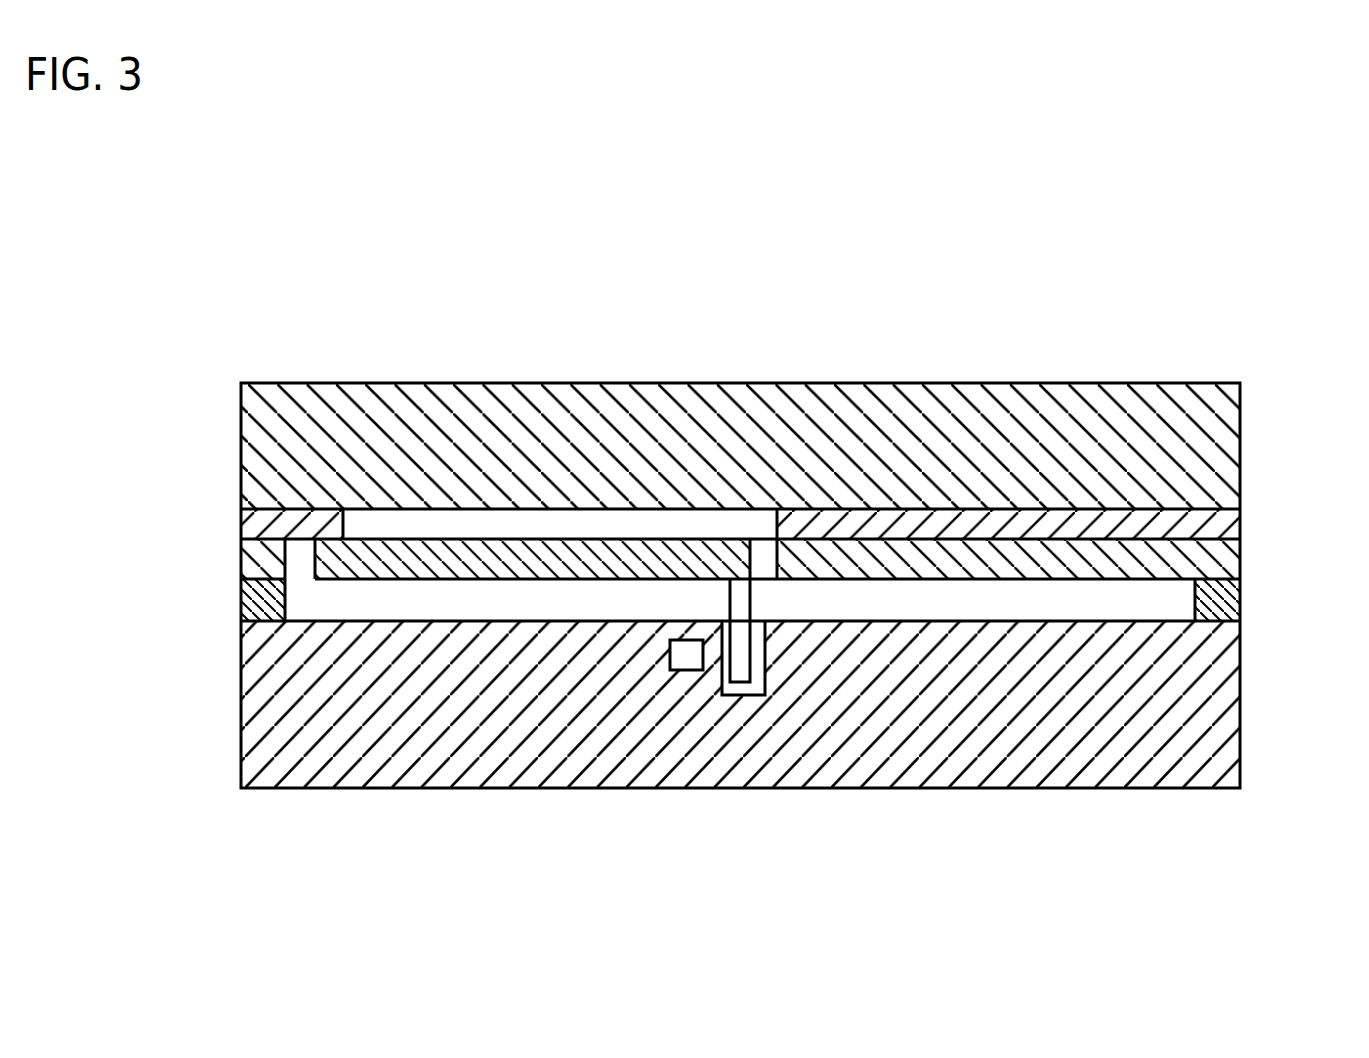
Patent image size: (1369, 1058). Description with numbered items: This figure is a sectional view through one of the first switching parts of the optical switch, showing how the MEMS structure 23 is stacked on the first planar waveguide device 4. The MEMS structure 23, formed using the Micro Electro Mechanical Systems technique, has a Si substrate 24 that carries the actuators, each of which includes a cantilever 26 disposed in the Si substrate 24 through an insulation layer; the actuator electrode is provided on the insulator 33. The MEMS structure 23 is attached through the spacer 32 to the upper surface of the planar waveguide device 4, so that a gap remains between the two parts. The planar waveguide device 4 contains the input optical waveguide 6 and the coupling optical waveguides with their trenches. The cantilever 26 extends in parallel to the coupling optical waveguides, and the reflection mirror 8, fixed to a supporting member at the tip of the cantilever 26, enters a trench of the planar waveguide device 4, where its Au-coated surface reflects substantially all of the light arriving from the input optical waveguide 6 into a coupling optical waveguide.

The MEMS structure 23 is at (975, 335).
The Si substrate 24 is at (620, 422).
The cantilever 26 is at (453, 557).
The insulator 33 is at (1197, 532).
The spacer 32 is at (1220, 598).
The first planar waveguide device 4 is at (898, 752).
The input optical waveguide 6 is at (686, 667).
The reflection mirrors 8 is at (741, 672).